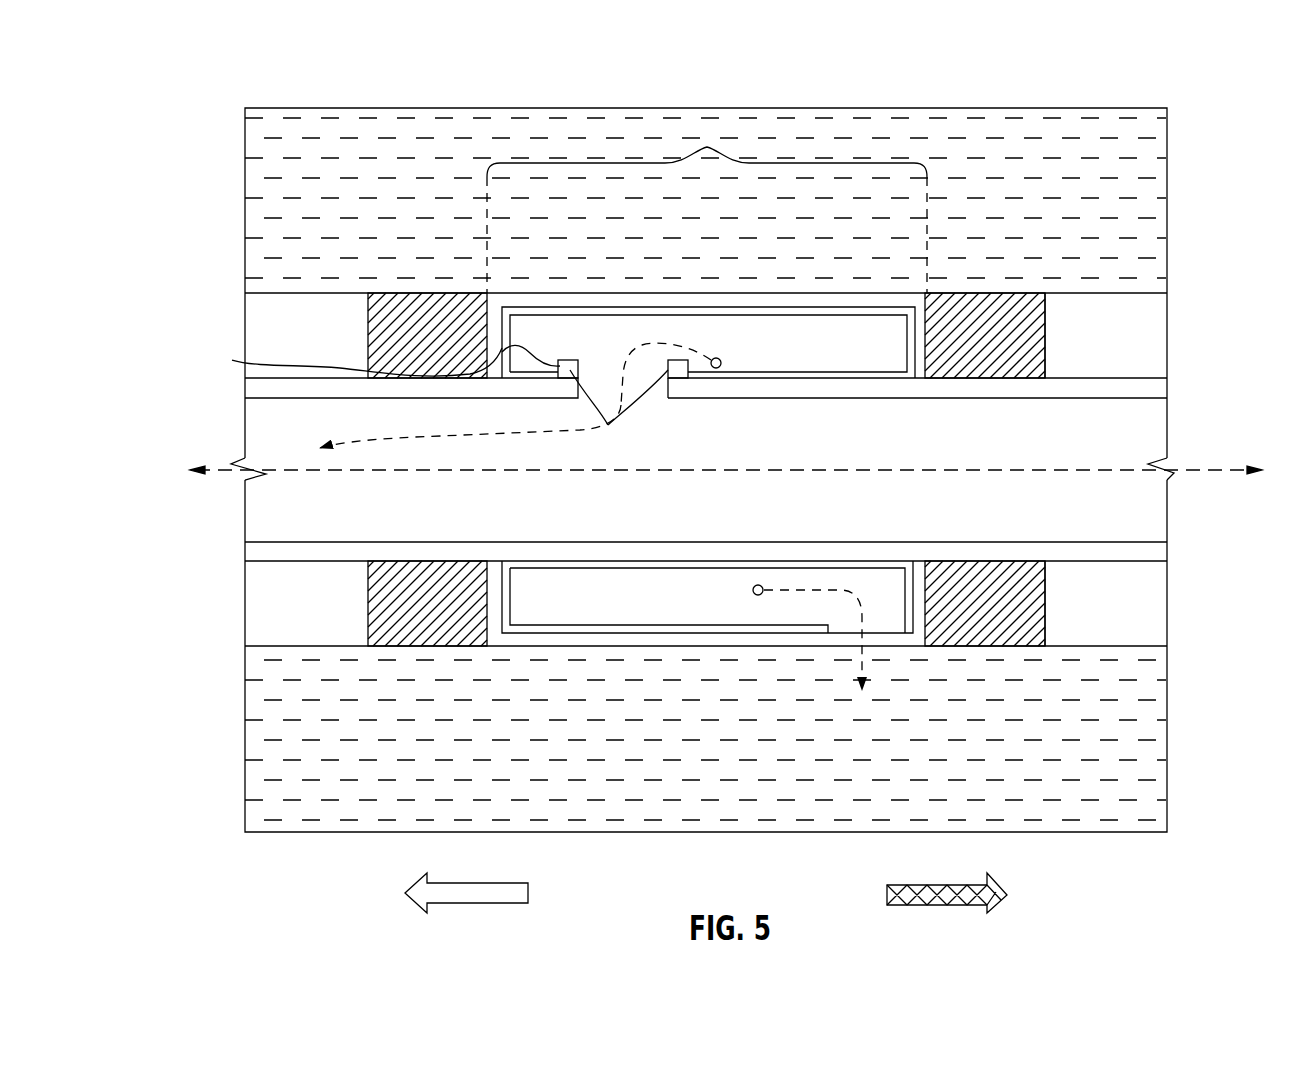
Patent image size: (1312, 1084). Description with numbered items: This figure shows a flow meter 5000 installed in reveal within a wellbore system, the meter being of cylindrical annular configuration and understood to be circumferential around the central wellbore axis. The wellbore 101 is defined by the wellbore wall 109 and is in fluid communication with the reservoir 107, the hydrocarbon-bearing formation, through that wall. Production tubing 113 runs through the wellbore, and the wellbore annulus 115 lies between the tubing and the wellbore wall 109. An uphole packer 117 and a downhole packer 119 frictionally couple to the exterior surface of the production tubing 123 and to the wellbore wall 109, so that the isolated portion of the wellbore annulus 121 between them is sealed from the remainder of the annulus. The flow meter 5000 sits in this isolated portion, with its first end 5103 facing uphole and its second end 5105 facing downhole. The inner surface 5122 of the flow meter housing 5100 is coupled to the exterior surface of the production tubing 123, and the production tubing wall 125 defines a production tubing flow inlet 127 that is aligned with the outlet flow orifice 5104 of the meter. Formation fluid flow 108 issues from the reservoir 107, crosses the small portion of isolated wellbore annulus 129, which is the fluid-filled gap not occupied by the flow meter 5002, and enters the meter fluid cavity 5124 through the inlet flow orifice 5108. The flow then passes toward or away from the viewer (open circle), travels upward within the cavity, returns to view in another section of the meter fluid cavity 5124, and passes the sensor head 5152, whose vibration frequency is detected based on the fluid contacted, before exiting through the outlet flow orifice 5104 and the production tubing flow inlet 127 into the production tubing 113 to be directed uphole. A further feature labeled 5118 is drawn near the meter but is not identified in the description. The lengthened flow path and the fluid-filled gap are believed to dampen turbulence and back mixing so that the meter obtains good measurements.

The flow meter 5000 is at (1206, 90).
The wellbore 101 is at (1145, 341).
The reservoir 107 is at (682, 210).
The formation fluid flow 108 is at (278, 508).
The wellbore wall 109 is at (1143, 293).
The production tubing 113 is at (1000, 520).
The wellbore annulus 115 is at (270, 602).
The uphole packer 117 is at (395, 352).
The downhole packer 119 is at (1043, 354).
The isolated portion of the wellbore annulus 121 is at (686, 142).
The exterior surface of the production tubing 123 is at (1157, 377).
The production tubing wall 125 is at (1143, 389).
The production tubing flow inlet 127 is at (648, 394).
The portion of isolated wellbore annulus 129 is at (807, 291).
The flow meter 5002 is at (877, 291).
The flow meter housing 5100 is at (882, 308).
The first end 5103 is at (502, 327).
The outlet flow orifice 5104 is at (608, 388).
The second end 5105 is at (918, 356).
The inlet flow orifice 5108 is at (880, 632).
The first direction 5118 is at (598, 627).
The inner surface 5122 is at (783, 380).
The meter fluid cavity 5124 is at (730, 355).
The sensor head 5152 is at (478, 436).